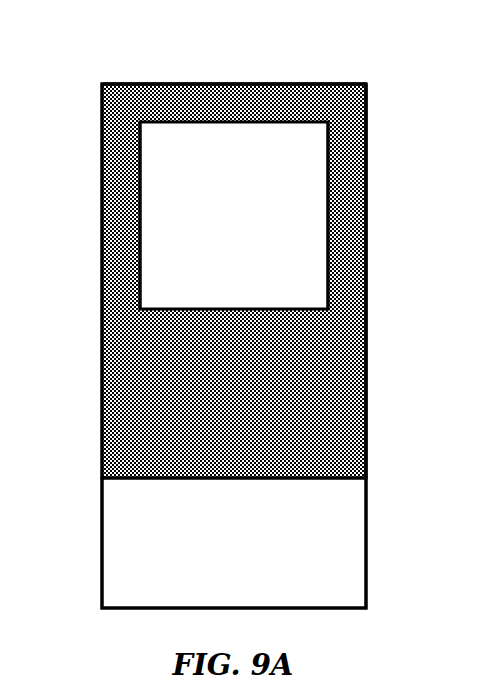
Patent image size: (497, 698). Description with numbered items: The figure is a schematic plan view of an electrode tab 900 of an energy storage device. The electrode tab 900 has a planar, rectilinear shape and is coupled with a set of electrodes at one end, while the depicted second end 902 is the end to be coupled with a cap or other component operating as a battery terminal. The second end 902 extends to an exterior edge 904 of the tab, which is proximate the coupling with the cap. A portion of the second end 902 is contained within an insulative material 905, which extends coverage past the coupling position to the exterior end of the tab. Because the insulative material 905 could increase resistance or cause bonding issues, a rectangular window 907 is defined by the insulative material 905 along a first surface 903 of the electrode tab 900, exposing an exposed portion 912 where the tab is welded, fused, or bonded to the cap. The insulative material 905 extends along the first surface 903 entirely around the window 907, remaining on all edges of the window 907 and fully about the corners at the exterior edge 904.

The electrode tab 900 is at (83, 100).
The second end 902 is at (366, 517).
The first surface 903 is at (366, 383).
The exterior edge 904 is at (250, 83).
The insulative material 905 is at (366, 272).
The window 907 is at (328, 200).
The exposed portion 912 is at (140, 243).